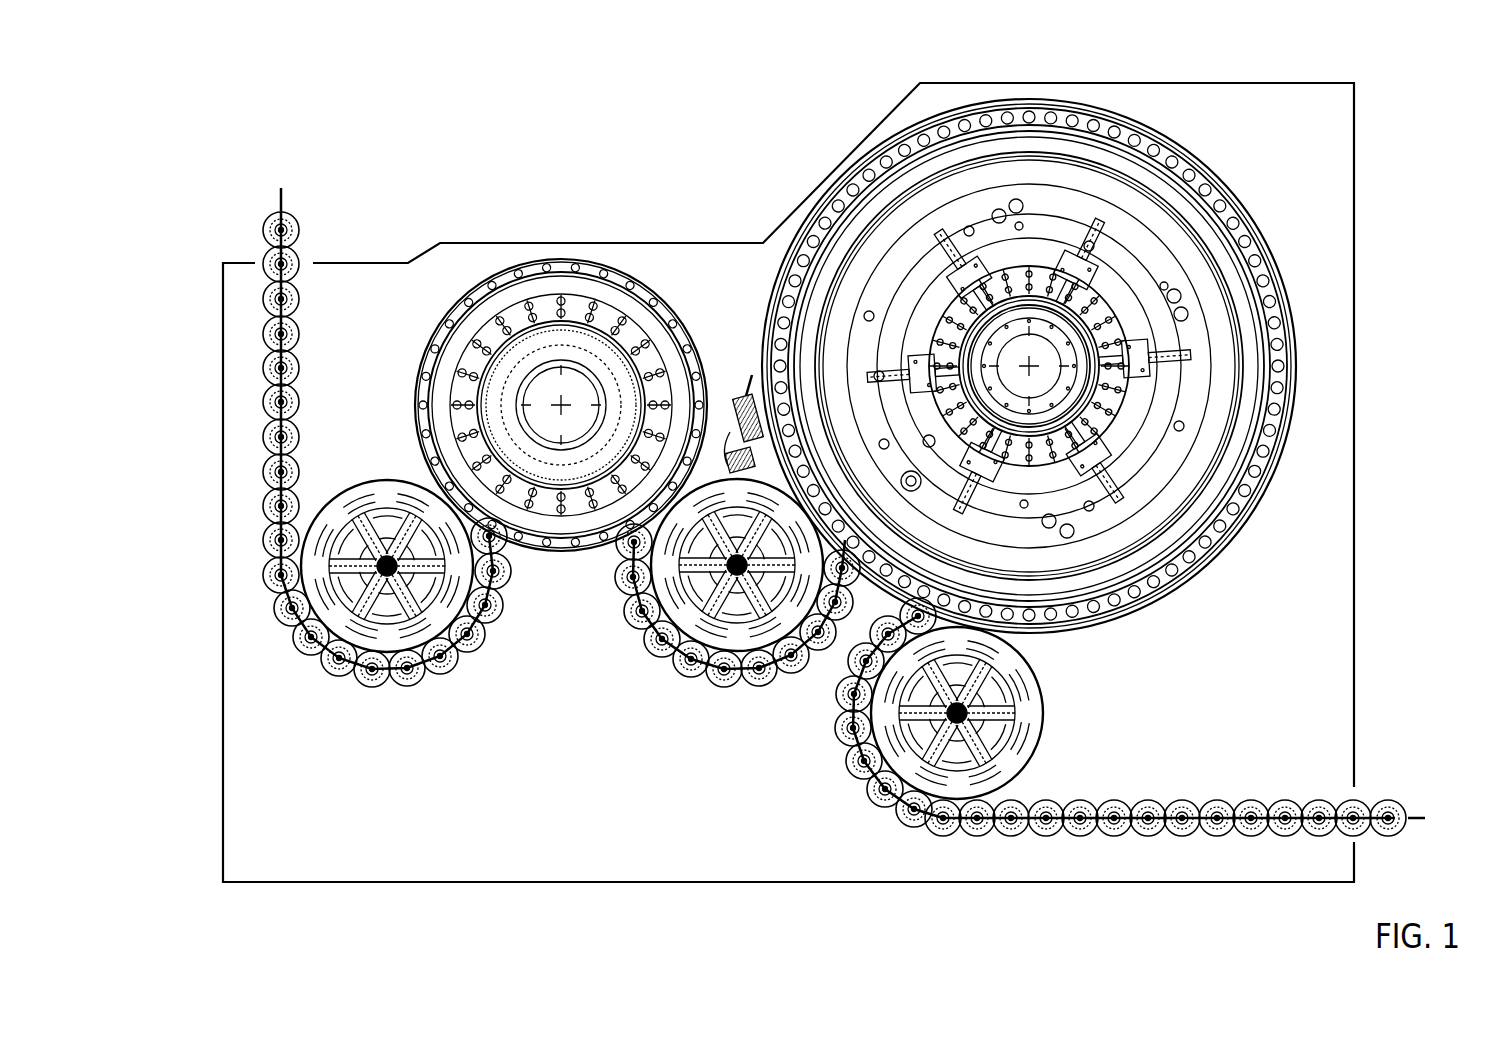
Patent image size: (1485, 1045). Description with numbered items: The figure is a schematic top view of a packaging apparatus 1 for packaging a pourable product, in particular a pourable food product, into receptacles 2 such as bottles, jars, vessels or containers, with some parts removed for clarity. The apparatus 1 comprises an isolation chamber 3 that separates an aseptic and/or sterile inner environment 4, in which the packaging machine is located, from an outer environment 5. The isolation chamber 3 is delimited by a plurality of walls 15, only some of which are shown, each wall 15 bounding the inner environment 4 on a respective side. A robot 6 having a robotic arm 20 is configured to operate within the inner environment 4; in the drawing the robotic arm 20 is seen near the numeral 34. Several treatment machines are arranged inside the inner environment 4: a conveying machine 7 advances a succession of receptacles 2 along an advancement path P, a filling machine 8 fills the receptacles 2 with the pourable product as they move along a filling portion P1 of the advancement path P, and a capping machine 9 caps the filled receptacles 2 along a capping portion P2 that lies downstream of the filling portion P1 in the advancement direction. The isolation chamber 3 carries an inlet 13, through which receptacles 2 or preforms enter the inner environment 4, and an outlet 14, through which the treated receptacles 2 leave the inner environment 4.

The packaging apparatus 1 is at (195, 132).
The receptacles 2 is at (262, 404).
The isolation chamber 3 is at (513, 243).
The inner environment 4 is at (782, 245).
The outer environment 5 is at (1067, 62).
The robot 6 is at (718, 368).
The conveying machine 7 is at (1105, 727).
The filling machine 8 is at (1247, 130).
The capping machine 9 is at (550, 580).
The inlet 13 is at (1358, 800).
The outlet 14 is at (345, 228).
The walls 15 is at (223, 548).
The robotic arm 20 is at (732, 400).
The gripping unit 34 is at (763, 413).
The advancement path P is at (830, 735).
The filling portion P1 is at (1210, 572).
The capping portion P2 is at (563, 258).